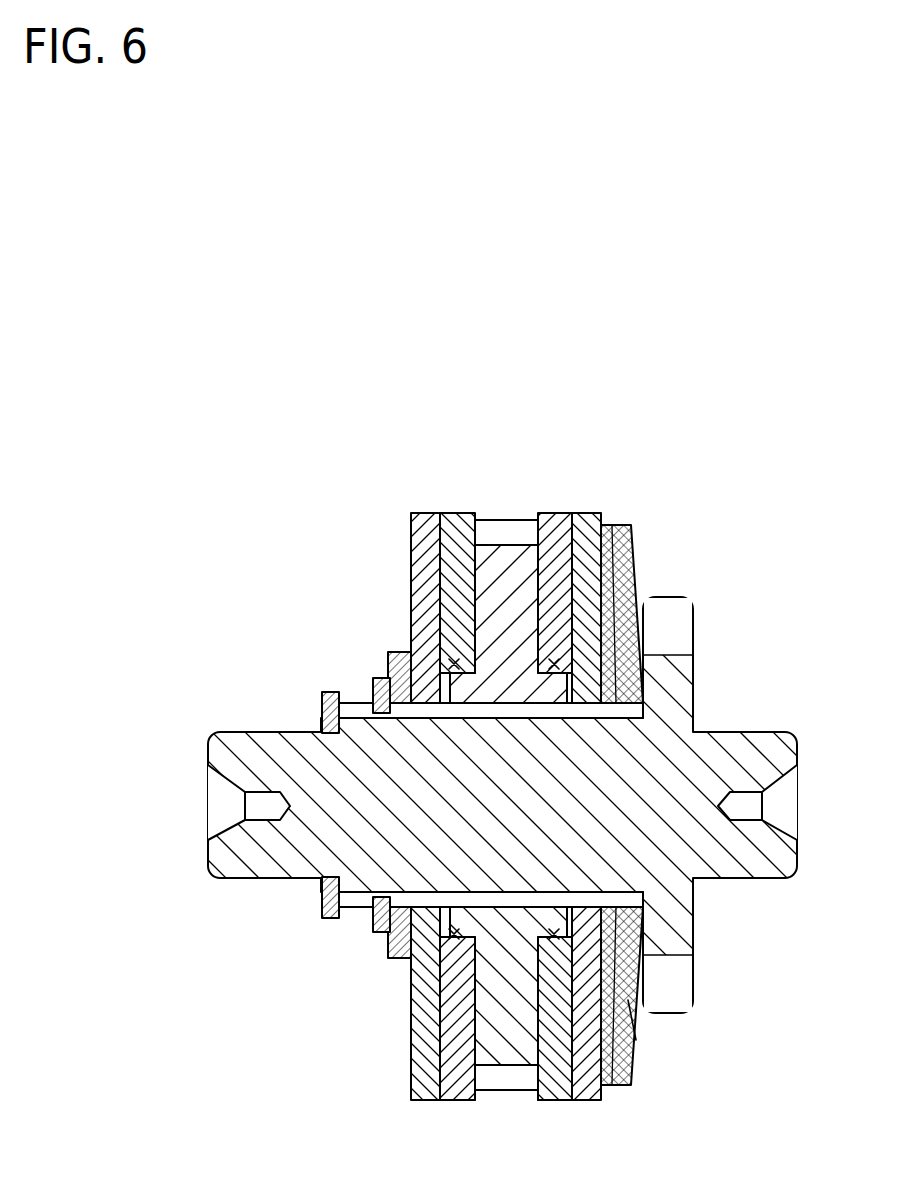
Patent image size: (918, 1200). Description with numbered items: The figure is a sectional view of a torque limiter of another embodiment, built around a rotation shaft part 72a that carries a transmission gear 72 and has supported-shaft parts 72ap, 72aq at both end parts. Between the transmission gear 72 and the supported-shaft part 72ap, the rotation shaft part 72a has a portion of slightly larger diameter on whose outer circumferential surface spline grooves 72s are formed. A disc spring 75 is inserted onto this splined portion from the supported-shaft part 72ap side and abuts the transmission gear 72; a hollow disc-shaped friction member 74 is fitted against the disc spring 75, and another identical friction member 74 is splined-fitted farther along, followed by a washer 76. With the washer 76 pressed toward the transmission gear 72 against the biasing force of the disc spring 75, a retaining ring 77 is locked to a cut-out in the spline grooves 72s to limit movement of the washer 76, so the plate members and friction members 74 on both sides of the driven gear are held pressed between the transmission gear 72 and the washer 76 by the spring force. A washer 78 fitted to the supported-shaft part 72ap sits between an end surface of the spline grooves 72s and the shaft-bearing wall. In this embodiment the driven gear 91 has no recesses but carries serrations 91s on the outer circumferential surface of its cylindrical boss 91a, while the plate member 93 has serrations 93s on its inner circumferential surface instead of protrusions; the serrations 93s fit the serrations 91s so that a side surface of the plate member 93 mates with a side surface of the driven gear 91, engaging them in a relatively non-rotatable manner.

The transmission gear 72 is at (665, 598).
The rotation shaft part 72a is at (490, 815).
The spline grooves 72s is at (456, 935).
The supported-shaft part 72ap is at (270, 878).
The supported-shaft part 72aq is at (727, 878).
The friction member 74 is at (422, 512).
The disc spring 75 is at (640, 525).
The washer 76 is at (398, 652).
The retaining ring 77 is at (380, 678).
The washer 78 is at (325, 693).
The driven gear 91 is at (505, 520).
The cylindrical boss 91a is at (627, 1035).
The serrations 91s is at (455, 660).
The plate member 93 is at (455, 512).
The serrations 93s is at (447, 1100).